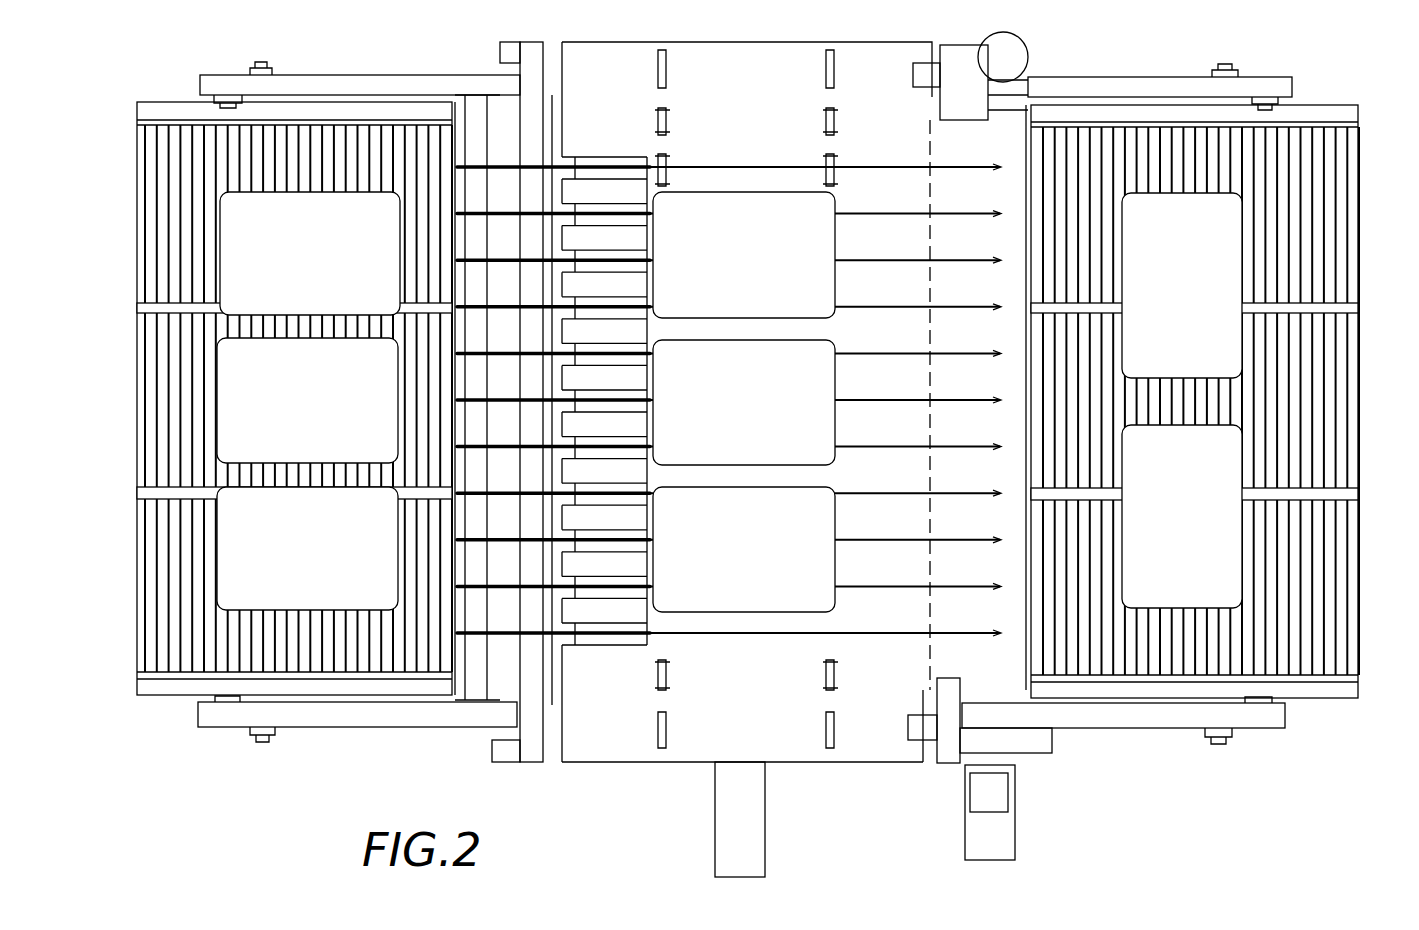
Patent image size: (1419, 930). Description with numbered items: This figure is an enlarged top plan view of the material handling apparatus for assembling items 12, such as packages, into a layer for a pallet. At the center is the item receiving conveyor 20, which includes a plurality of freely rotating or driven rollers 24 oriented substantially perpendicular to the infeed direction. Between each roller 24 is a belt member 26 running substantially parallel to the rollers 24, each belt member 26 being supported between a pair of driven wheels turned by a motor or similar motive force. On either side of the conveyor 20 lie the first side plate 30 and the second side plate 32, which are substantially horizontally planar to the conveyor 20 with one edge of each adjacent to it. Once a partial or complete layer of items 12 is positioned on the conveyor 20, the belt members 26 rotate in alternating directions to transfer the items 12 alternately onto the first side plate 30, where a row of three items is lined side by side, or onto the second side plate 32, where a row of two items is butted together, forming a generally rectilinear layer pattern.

The first side plate 30 is at (172, 180).
The second side plate 32 is at (1285, 118).
The belt member 26 is at (486, 160).
The item receiving conveyor 20 is at (530, 715).
The roller 24 is at (595, 655).
The item 12 is at (1190, 478).